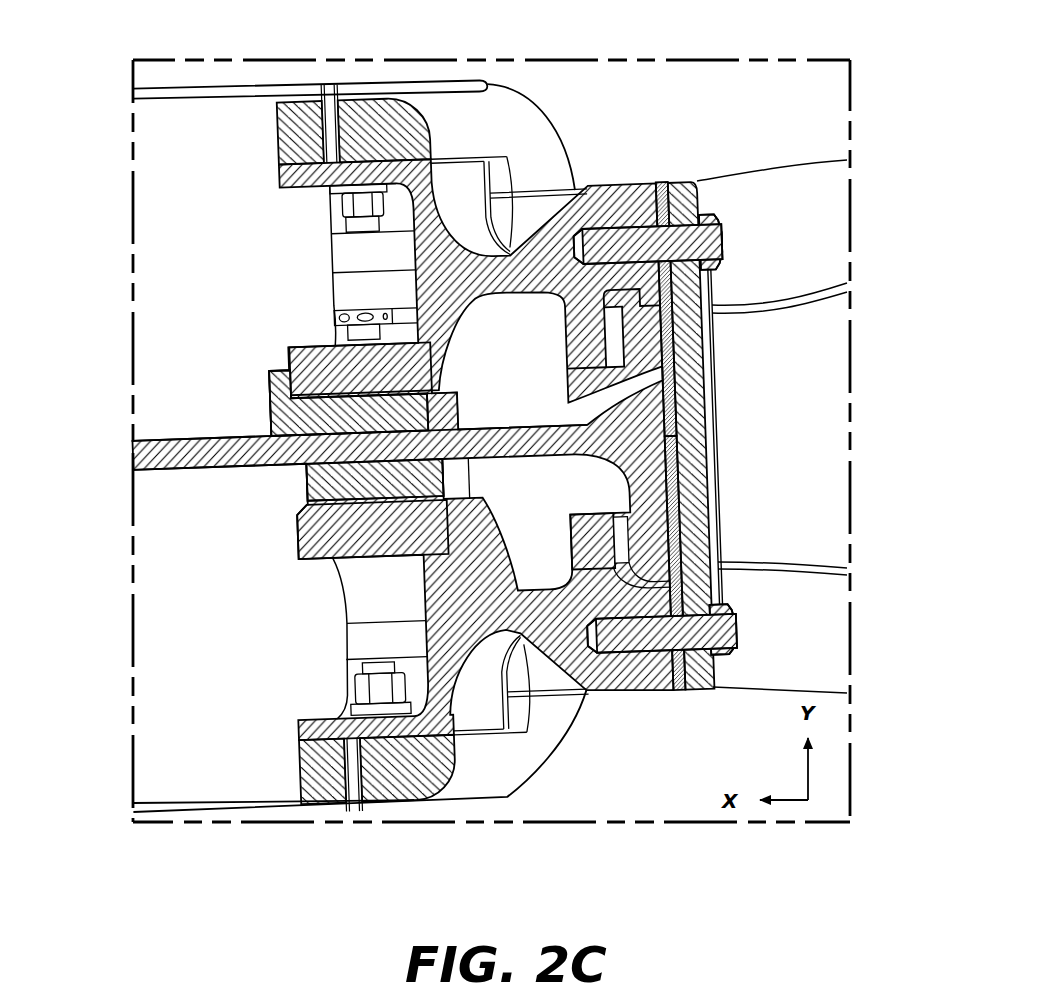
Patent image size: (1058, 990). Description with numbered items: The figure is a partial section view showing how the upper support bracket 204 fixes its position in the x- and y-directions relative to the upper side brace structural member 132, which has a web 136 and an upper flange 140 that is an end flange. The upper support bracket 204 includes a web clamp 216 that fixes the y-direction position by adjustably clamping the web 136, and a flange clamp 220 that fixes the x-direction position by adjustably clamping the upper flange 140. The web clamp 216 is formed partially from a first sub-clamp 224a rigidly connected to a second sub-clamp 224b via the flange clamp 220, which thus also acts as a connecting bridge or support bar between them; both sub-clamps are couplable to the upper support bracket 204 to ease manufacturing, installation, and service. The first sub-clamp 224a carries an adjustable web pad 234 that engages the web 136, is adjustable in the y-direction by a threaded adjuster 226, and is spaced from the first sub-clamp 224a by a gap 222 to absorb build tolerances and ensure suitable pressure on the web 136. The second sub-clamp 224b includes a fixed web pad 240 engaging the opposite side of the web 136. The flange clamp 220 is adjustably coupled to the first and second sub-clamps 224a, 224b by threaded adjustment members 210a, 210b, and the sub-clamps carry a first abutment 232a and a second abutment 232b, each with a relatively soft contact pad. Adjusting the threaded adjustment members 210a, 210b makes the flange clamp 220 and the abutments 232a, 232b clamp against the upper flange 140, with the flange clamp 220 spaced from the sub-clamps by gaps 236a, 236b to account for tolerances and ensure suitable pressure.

The upper side brace structural member 132 is at (790, 193).
The web 136 is at (170, 455).
The upper flange 140 is at (647, 497).
The upper support bracket 204 is at (513, 118).
The threaded adjustment member 210a is at (713, 231).
The threaded adjustment member 210b is at (735, 620).
The web clamp 216 is at (352, 255).
The flange clamp 220 is at (692, 376).
The gap 222 is at (440, 393).
The first sub-clamp 224a is at (296, 358).
The second sub-clamp 224b is at (313, 535).
The threaded adjuster 226 is at (340, 318).
The first abutment 232a is at (604, 333).
The second abutment 232b is at (593, 547).
The adjustable web pad 234 is at (276, 403).
The gap 236a is at (657, 180).
The gap 236b is at (675, 687).
The fixed web pad 240 is at (318, 484).